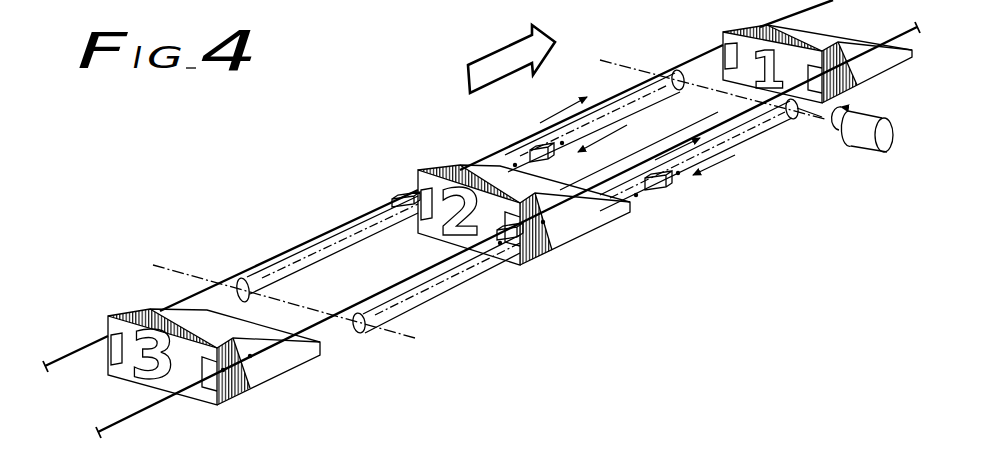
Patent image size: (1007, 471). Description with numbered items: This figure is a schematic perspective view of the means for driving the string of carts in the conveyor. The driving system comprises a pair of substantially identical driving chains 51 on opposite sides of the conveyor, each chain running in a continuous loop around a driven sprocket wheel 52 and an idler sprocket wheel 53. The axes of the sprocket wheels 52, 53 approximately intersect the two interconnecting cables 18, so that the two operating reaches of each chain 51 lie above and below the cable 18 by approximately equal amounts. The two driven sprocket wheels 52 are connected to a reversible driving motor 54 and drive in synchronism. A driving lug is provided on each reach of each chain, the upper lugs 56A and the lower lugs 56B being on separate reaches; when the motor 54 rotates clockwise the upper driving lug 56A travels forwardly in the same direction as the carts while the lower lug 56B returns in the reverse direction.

The interconnecting cable 18 is at (143, 409).
The driving chain 51 is at (365, 240).
The driven sprocket wheel 52 is at (680, 70).
The idler sprocket wheel 53 is at (244, 278).
The reversible driving motor 54 is at (862, 148).
The upper driving lug 56A is at (402, 196).
The lower driving lug 56B is at (538, 150).